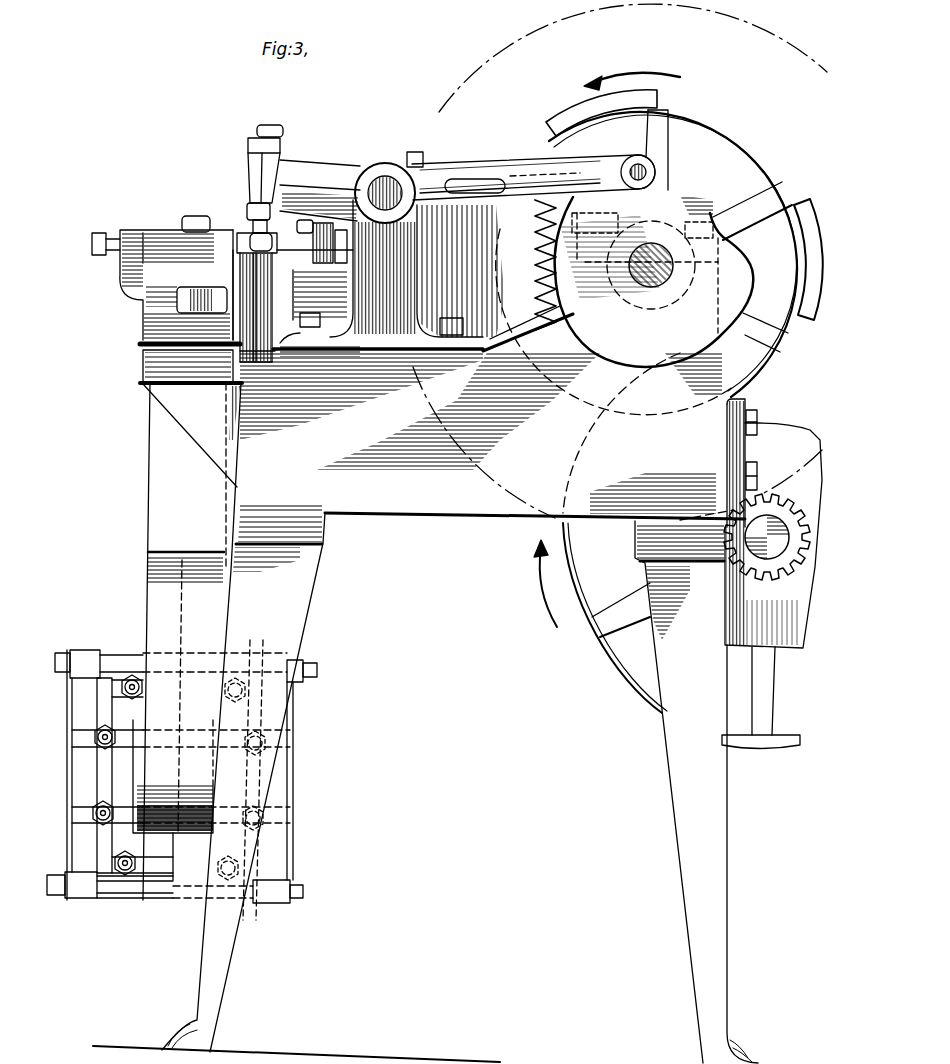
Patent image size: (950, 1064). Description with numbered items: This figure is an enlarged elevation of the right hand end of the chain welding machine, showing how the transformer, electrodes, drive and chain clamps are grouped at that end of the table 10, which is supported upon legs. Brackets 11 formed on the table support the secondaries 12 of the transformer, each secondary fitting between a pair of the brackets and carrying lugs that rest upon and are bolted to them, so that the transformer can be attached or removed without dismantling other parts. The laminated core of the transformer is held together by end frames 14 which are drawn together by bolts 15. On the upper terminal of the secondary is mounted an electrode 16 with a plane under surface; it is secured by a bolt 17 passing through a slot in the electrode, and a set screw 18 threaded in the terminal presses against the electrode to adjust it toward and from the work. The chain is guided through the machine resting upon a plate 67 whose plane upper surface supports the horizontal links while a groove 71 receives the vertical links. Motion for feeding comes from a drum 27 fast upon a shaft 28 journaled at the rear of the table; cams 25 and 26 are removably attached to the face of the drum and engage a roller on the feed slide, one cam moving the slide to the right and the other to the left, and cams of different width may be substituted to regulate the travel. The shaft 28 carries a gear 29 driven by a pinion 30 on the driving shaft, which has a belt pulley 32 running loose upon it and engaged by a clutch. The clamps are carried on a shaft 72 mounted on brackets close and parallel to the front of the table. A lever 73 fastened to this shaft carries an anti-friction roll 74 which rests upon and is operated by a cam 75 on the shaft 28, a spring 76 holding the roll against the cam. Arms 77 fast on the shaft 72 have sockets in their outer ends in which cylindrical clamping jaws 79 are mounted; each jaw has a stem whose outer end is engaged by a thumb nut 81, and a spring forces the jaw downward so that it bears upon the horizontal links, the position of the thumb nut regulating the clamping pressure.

The table 10 is at (423, 506).
The brackets 11 is at (140, 379).
The secondaries 12 is at (158, 492).
The end frames 14 is at (78, 783).
The bolts 15 is at (122, 687).
The electrode 16 is at (158, 230).
The bolt 17 is at (193, 215).
The set screw 18 is at (99, 254).
The cam 25 is at (573, 117).
The cam 26 is at (805, 203).
The drum 27 is at (740, 147).
The shaft 28 is at (670, 280).
The gear 29 is at (755, 27).
The pinion 30 is at (775, 575).
The belt pulley 32 is at (598, 637).
The plate 67 is at (238, 353).
The groove 71 is at (229, 392).
The shaft 72 is at (378, 180).
The lever 73 is at (496, 162).
The anti-friction roll 74 is at (657, 173).
The cam 75 is at (746, 283).
The spring 76 is at (540, 218).
The arms 77 is at (323, 162).
The cylindrical clamping jaws 79 is at (247, 210).
The thumb nut 81 is at (268, 131).